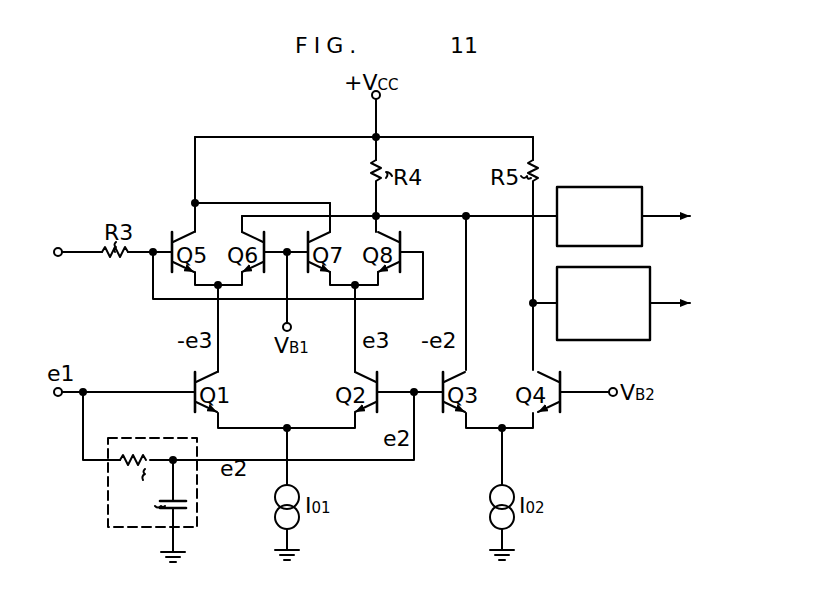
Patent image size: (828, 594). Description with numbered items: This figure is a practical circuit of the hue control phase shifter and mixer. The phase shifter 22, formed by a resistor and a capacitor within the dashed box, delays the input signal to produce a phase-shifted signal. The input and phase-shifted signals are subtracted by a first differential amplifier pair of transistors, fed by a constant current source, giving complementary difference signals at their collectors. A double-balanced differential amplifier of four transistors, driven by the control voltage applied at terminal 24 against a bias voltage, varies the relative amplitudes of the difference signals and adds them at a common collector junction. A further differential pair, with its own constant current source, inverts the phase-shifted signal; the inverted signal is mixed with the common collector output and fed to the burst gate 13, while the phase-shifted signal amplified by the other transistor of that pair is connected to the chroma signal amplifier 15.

The burst gate 13 is at (600, 187).
The chroma signal amplifier 15 is at (612, 341).
The phase shifter 22 is at (197, 497).
The control signal input terminal Ec 24 is at (58, 256).